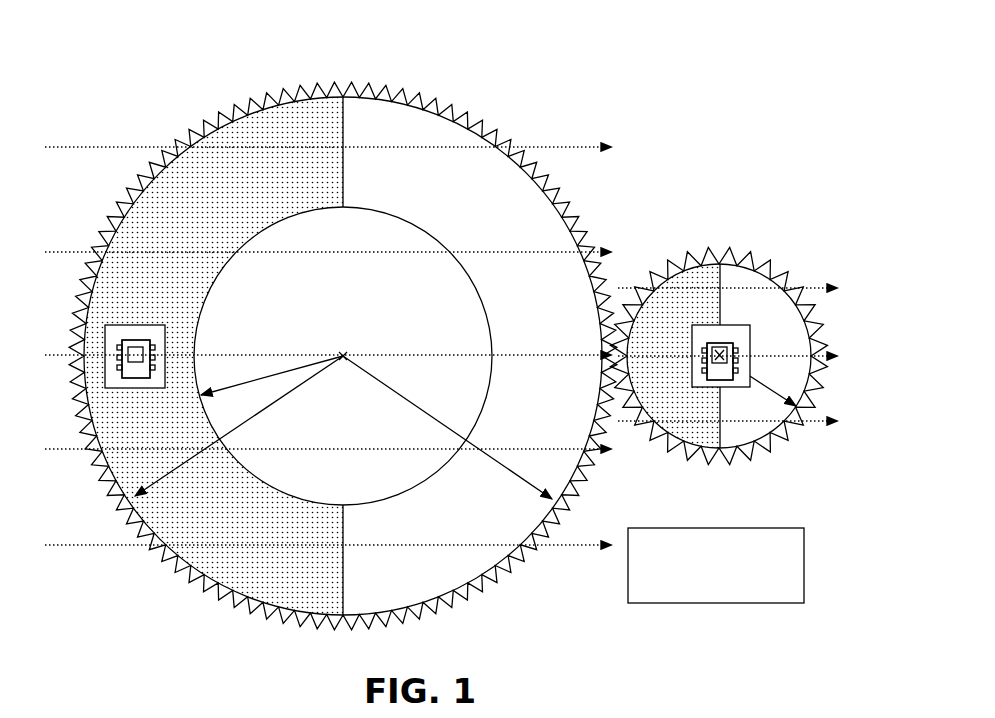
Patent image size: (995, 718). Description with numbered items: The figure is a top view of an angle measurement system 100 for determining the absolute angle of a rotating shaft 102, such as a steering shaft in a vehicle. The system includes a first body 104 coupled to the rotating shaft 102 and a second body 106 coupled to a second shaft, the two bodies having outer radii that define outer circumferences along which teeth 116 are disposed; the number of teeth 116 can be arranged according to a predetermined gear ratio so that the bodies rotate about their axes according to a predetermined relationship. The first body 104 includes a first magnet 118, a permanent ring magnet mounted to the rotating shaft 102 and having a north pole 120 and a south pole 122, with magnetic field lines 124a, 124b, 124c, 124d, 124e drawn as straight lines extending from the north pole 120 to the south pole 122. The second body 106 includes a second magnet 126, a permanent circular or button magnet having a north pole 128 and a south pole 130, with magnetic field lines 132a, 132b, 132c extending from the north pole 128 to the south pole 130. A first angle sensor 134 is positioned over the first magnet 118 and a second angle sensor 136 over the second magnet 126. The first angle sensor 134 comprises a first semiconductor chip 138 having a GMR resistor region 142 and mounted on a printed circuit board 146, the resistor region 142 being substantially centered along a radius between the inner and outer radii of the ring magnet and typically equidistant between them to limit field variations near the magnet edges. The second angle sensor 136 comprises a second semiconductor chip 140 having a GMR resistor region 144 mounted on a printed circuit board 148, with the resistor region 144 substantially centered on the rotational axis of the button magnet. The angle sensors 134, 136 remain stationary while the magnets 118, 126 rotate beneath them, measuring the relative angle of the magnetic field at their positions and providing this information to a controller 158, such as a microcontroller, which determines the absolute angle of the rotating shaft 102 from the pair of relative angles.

The angle measurement system 100 is at (126, 38).
The rotating shaft 102 is at (343, 343).
The first body 104 is at (447, 336).
The second body 106 is at (709, 325).
The teeth 116 is at (469, 598).
The first magnet 118 is at (343, 94).
The north pole 120 is at (213, 356).
The south pole 122 is at (472, 356).
The magnetic field line 124a is at (78, 146).
The magnetic field line 124b is at (78, 251).
The magnetic field line 124c is at (78, 354).
The magnetic field line 124d is at (78, 448).
The magnetic field line 124e is at (78, 544).
The second magnet 126 is at (723, 278).
The north pole 128 is at (673, 356).
The south pole 130 is at (765, 356).
The magnetic field line 132a is at (820, 288).
The magnetic field line 132b is at (820, 356).
The magnetic field line 132c is at (820, 421).
The first angle sensor 134 is at (139, 386).
The second angle sensor 136 is at (716, 389).
The first semiconductor chip 138 is at (149, 372).
The second semiconductor chip 140 is at (712, 370).
The GMR resistor region 142 is at (143, 351).
The GMR resistor region 144 is at (729, 355).
The printed circuit board 146 is at (124, 330).
The printed circuit board 148 is at (709, 379).
The controller 158 is at (718, 604).